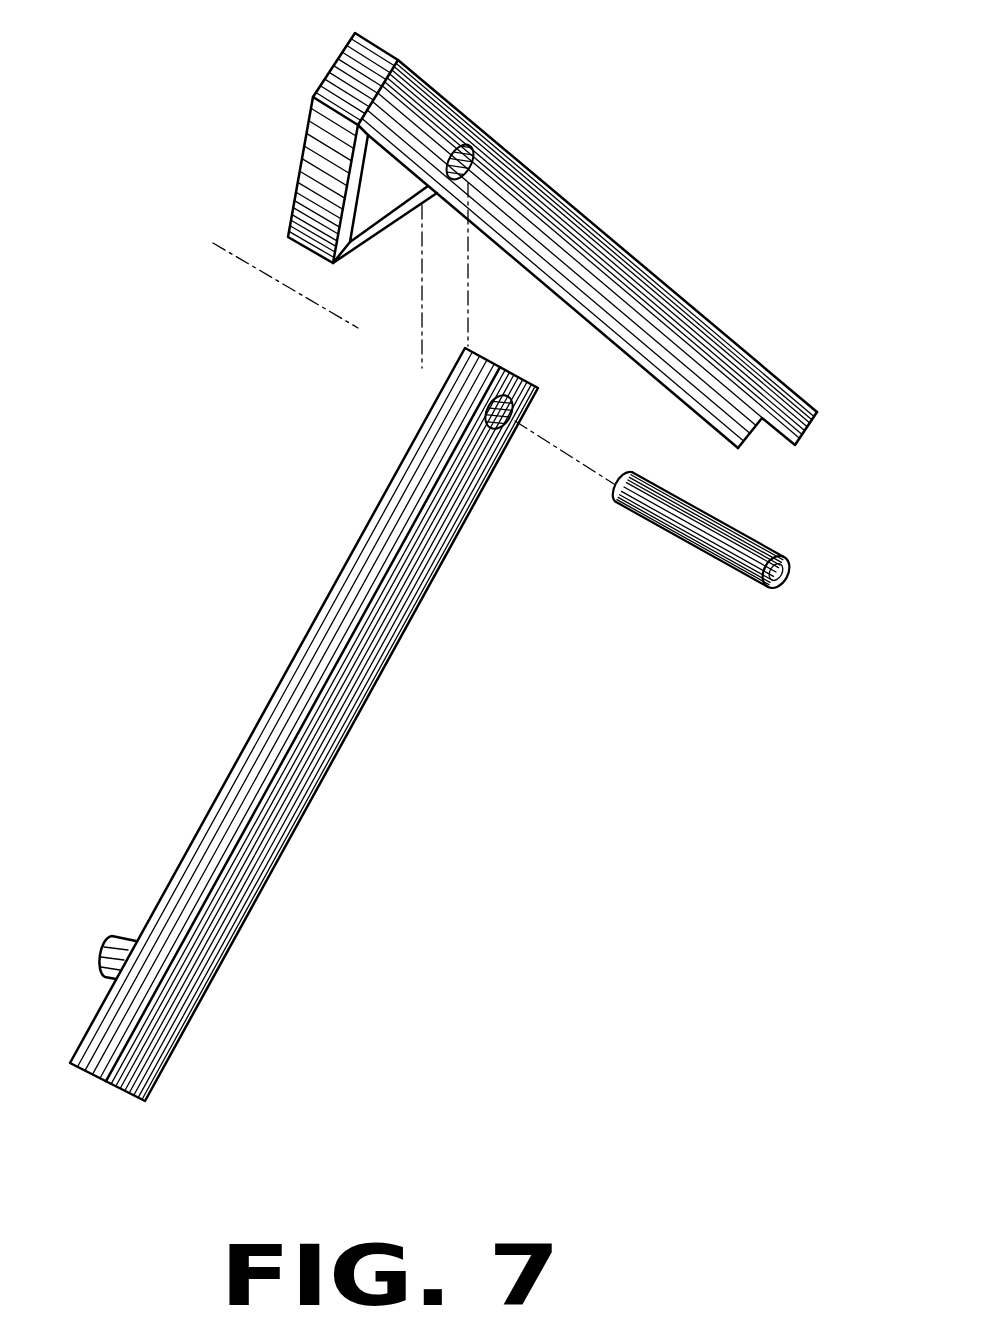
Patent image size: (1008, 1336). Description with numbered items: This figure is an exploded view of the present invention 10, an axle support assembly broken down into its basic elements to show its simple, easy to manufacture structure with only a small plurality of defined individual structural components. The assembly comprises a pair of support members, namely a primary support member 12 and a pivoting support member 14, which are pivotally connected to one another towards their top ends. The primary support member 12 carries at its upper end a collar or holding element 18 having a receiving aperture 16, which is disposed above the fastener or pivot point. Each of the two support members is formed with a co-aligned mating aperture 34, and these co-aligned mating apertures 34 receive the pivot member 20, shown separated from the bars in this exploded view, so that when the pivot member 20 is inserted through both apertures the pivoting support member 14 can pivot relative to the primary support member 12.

The present invention 10 is at (787, 263).
The primary support member 12 is at (572, 238).
The pivoting support member 14 is at (290, 798).
The receiving aperture 16 is at (352, 202).
The collar or holding element 18 is at (307, 200).
The pivot member 20 is at (728, 553).
The co-aligned mating apertures 34 is at (467, 148).